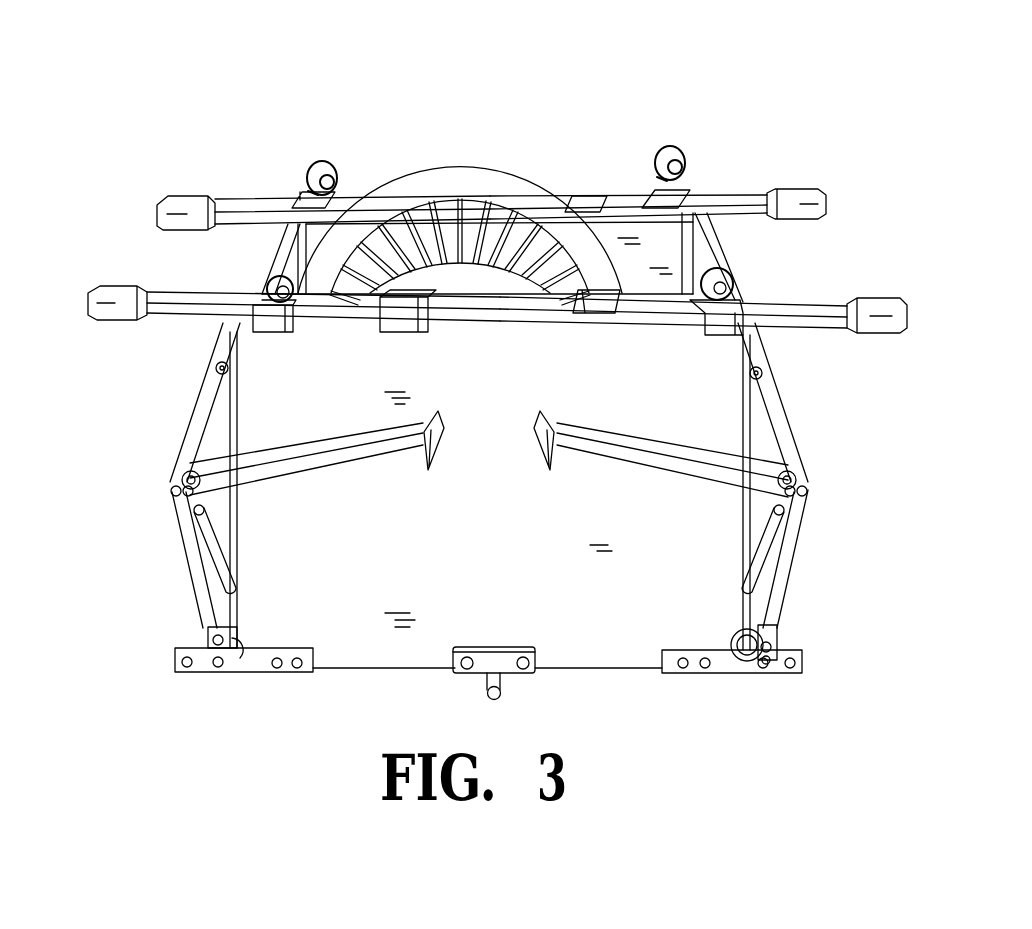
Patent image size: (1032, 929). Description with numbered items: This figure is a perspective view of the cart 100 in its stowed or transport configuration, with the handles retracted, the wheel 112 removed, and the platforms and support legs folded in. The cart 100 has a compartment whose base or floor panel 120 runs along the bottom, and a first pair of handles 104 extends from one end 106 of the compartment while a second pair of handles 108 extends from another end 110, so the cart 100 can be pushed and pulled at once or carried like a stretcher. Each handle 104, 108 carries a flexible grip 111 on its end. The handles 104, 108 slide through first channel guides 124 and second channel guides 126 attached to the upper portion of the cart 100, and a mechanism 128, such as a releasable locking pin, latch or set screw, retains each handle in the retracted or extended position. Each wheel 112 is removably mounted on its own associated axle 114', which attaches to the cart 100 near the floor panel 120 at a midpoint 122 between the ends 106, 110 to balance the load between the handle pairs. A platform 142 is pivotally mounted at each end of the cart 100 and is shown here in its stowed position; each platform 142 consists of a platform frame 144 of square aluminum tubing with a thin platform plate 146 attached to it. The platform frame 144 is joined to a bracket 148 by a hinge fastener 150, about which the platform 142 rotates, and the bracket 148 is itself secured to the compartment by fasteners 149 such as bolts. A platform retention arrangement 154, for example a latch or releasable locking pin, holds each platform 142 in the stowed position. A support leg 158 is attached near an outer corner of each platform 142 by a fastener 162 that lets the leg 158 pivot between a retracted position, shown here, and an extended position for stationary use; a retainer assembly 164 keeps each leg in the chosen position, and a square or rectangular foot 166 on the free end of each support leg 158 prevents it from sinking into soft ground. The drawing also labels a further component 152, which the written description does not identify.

The cart 100 is at (492, 92).
The first pair of handles 104 is at (227, 198).
The one end of the compartment 106 is at (276, 262).
The second pair of handles 108 is at (752, 192).
The another end of the compartment 110 is at (720, 250).
The grip 111 is at (173, 204).
The wheel 112 is at (443, 186).
The associated axle 114' is at (536, 698).
The base or floor panel 120 is at (418, 670).
The midpoint 122 is at (499, 647).
The first channel guides 124 is at (300, 196).
The second channel guides 126 is at (586, 196).
The mechanism 128 is at (339, 158).
The platform 142 is at (180, 538).
The platform frame 144 is at (215, 575).
The platform plate 146 is at (216, 408).
The bracket 148 is at (218, 672).
The fasteners 149 is at (300, 657).
The fastener 150 is at (250, 672).
The vertical post 152 is at (241, 412).
The platform retention arrangement 154 is at (193, 639).
The support leg 158 is at (325, 465).
The fastener 162 is at (170, 492).
The retainer assembly 164 is at (164, 475).
The foot 166 is at (440, 466).